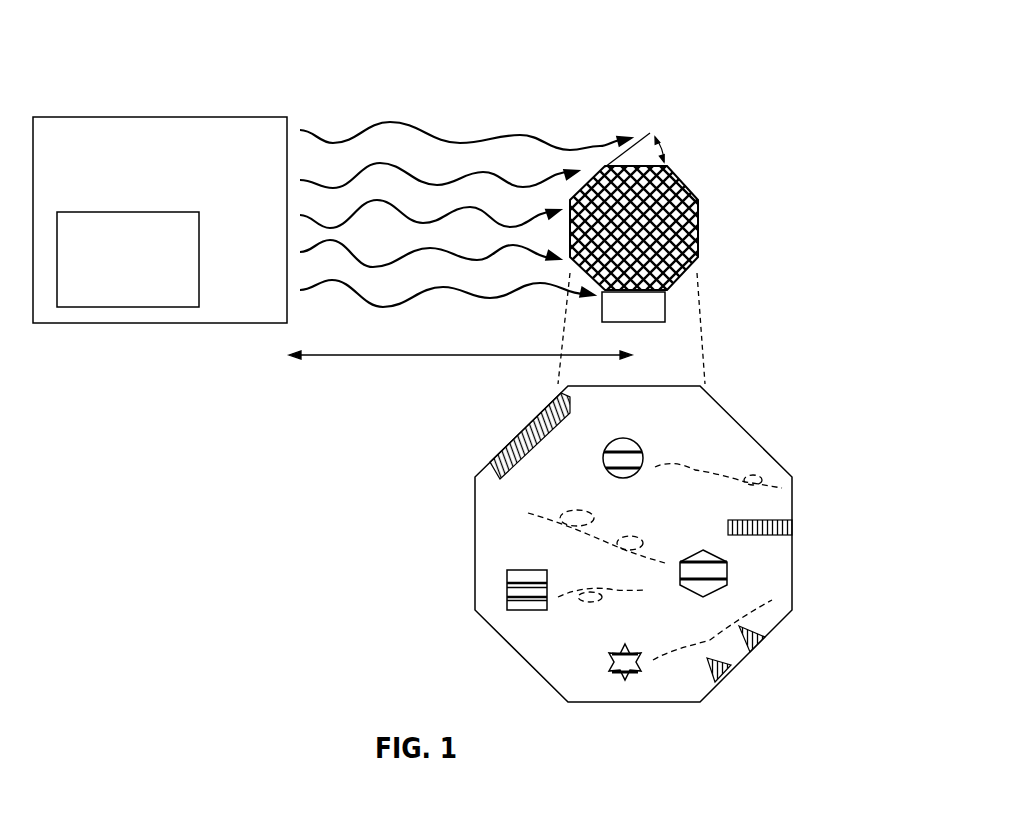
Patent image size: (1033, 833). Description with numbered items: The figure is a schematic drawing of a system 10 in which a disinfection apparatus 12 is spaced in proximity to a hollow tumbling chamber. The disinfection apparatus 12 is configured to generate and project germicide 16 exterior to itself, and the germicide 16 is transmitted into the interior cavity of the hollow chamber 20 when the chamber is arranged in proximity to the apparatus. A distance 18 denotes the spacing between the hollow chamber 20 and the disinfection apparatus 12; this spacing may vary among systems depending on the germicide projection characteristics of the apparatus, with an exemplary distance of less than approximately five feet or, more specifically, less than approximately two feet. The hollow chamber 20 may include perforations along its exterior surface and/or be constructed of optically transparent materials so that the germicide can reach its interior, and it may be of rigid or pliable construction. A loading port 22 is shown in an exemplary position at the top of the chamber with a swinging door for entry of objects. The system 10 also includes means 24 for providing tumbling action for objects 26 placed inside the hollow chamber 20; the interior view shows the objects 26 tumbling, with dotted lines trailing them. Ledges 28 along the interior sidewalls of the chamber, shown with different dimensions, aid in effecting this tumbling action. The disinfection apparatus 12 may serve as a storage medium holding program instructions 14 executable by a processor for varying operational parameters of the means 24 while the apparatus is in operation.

The system 10 is at (345, 58).
The disinfection apparatus 12 is at (168, 186).
The program instructions 14 is at (140, 296).
The germicide 16 is at (423, 129).
The distance 18 is at (443, 353).
The hollow chamber 20 is at (683, 227).
The loading port 22 is at (635, 165).
The means for providing tumbling action 24 is at (633, 307).
The objects 26 is at (623, 458).
The ledges 28 is at (532, 437).